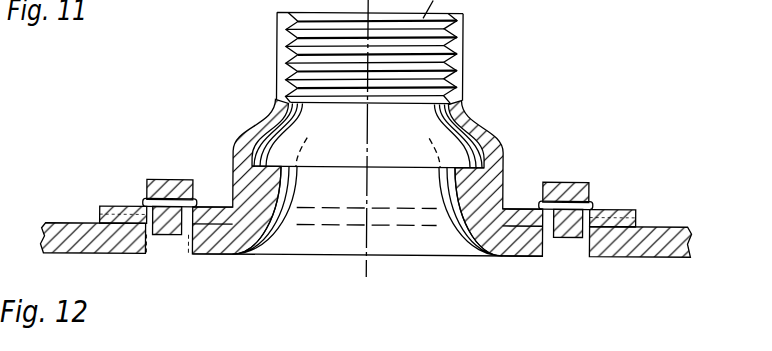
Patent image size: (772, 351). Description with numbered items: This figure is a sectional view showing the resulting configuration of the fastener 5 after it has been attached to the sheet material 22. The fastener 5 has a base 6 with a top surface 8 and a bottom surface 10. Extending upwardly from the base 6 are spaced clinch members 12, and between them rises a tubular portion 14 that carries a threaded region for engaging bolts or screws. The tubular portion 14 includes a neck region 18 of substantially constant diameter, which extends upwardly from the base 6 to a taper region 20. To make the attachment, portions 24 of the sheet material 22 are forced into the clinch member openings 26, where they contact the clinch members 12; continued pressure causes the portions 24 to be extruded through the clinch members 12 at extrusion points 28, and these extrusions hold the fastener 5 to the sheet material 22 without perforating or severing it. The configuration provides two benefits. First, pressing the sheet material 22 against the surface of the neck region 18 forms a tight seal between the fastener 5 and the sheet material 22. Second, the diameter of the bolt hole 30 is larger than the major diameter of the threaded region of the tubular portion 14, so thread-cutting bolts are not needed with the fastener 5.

The fastener 5 is at (212, 116).
The base 6 is at (100, 208).
The top surface 8 is at (127, 209).
The bottom surface 10 is at (110, 232).
The clinch members 12 is at (169, 180).
The tubular portion 14 is at (274, 61).
The neck region 18 is at (262, 204).
The taper region 20 is at (289, 134).
The sheet material 22 is at (692, 232).
The portions of sheet material 24 is at (583, 221).
The clinch member openings 26 is at (168, 228).
The extrusion points 28 is at (147, 200).
The bolt hole 30 is at (398, 236).